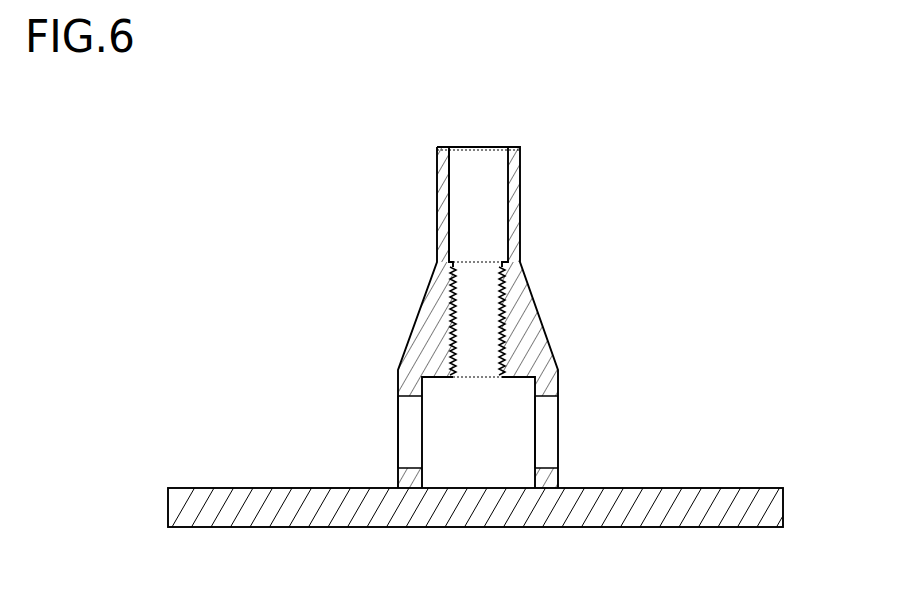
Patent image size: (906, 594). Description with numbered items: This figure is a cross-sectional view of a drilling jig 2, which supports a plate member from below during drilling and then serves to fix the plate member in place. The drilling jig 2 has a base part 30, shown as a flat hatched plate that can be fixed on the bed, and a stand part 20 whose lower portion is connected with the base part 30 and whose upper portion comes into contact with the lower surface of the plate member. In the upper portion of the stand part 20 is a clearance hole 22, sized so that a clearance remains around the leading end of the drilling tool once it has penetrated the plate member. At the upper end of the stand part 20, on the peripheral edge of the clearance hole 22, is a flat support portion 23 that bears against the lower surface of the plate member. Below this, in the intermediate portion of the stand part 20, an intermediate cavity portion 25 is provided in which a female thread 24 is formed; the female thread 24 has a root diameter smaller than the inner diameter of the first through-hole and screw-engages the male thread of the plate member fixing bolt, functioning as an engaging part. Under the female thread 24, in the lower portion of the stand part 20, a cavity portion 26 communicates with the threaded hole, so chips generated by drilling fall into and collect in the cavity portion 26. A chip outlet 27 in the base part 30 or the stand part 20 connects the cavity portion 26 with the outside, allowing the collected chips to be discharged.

The drilling jig 2 is at (587, 143).
The stand part 20 is at (473, 287).
The clearance hole 22 is at (506, 160).
The flat support portion 23 is at (443, 147).
The female thread 24 is at (504, 282).
The intermediate cavity portion 25 is at (482, 332).
The cavity portion 26 is at (527, 427).
The chip outlet 27 is at (405, 435).
The base part 30 is at (630, 528).